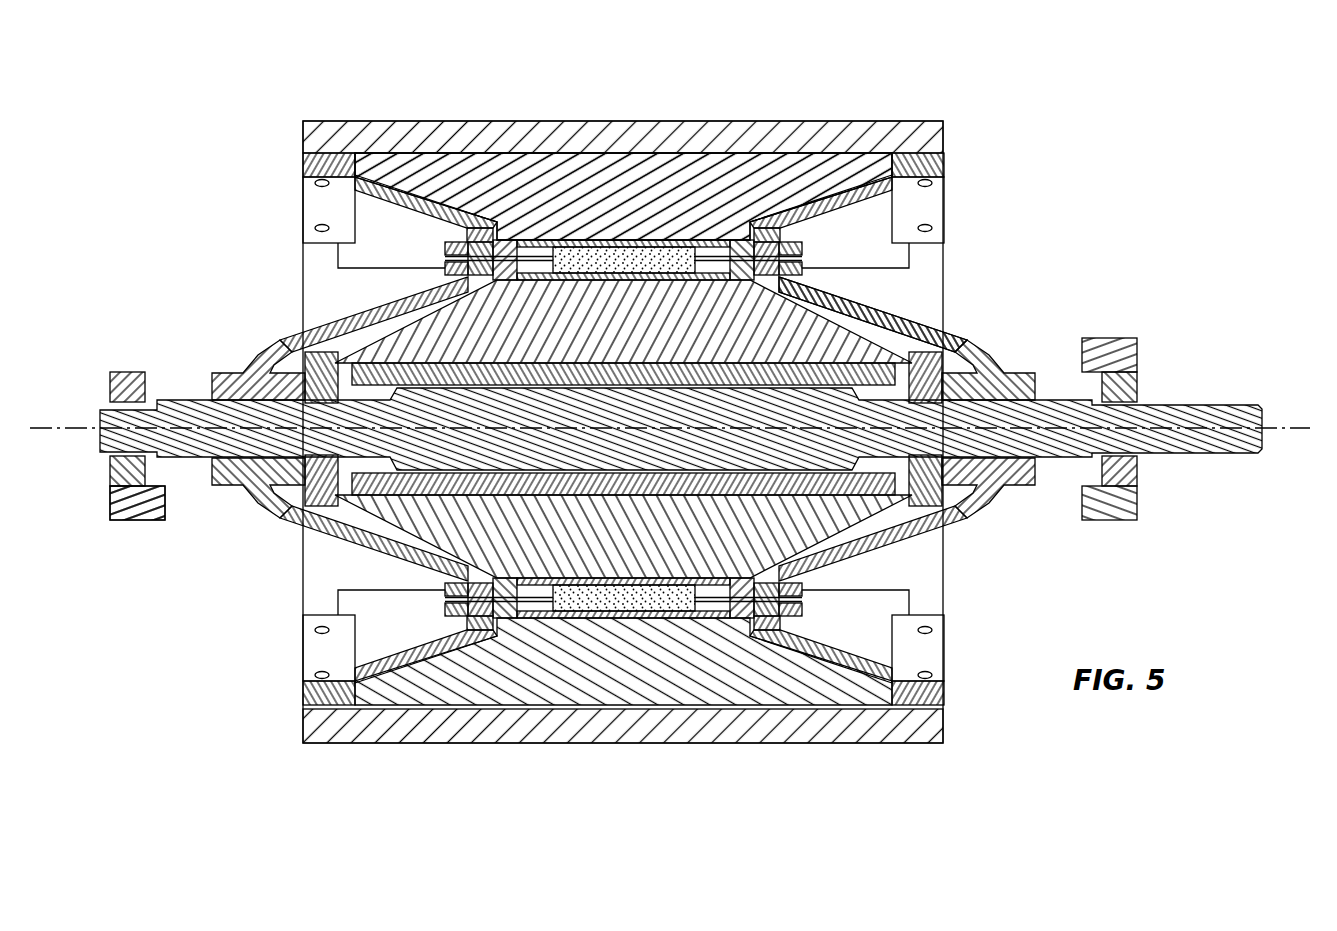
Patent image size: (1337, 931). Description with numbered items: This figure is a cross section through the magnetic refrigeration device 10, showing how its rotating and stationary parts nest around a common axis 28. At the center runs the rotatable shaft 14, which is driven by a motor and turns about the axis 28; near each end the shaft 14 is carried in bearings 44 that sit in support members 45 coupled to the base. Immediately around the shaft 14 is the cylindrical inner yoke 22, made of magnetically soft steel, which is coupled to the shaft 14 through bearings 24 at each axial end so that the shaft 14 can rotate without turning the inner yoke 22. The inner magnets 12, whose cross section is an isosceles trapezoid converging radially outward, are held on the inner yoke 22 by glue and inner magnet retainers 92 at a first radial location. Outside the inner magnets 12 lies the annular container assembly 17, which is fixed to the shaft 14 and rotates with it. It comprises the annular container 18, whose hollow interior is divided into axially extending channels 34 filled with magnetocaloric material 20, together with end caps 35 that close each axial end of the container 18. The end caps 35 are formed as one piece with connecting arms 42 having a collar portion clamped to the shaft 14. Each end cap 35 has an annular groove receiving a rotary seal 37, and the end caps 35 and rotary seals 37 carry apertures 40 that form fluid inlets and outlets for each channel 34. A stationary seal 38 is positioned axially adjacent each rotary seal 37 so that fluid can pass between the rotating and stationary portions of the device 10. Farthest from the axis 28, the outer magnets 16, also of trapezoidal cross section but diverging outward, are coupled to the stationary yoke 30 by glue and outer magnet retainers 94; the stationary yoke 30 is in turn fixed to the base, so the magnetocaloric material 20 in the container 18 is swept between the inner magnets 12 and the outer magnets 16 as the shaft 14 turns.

The magnetic refrigeration device 10 is at (1060, 90).
The inner magnets 12 is at (703, 193).
The rotatable shaft 14 is at (1205, 405).
The outer magnets 16 is at (747, 240).
The annular container assembly 17 is at (503, 743).
The annular container 18 is at (535, 283).
The magnetocaloric material 20 is at (548, 241).
The inner yoke 22 is at (623, 377).
The bearings 24 is at (310, 335).
The axis 28 is at (1312, 428).
The stationary yoke 30 is at (355, 121).
The channels 34 is at (603, 247).
The end caps 35 is at (505, 242).
The rotary seal 37 is at (480, 242).
The stationary seal 38 is at (785, 228).
The apertures 40 is at (445, 258).
The connecting arms 42 is at (900, 300).
The bearings 44 is at (125, 388).
The support members 45 is at (130, 512).
The inner magnet retainers 92 is at (325, 340).
The outer magnet retainers 94 is at (392, 178).